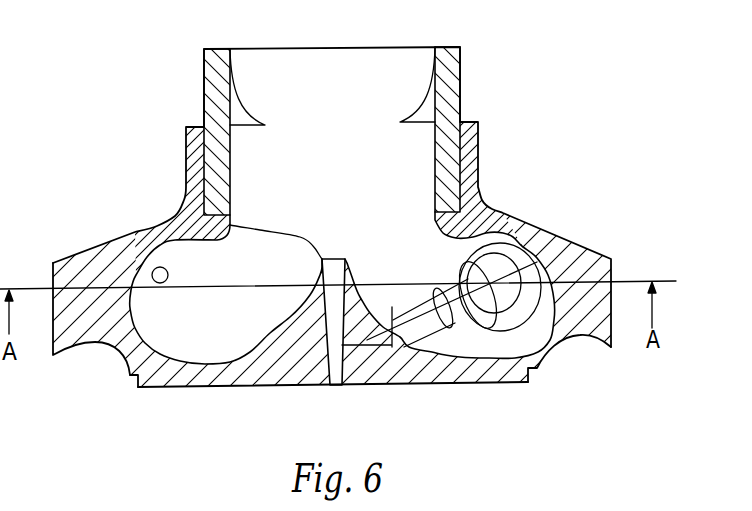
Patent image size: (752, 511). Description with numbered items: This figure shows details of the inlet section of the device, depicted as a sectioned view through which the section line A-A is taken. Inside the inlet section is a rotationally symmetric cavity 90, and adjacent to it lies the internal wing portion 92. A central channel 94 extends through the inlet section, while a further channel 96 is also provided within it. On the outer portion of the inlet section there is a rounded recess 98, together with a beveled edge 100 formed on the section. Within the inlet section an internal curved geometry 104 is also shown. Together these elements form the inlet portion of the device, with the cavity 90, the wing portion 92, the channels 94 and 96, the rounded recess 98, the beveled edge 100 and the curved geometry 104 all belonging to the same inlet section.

The rotationally symmetric cavity 90 is at (152, 276).
The internal wing portion 92 is at (240, 86).
The central channel 94 is at (230, 225).
The channel 96 is at (537, 263).
The rounded recess of the outer portion of the inlet section 98 is at (573, 336).
The beveled edge 100 is at (135, 378).
The internal curved geometry 104 is at (106, 342).